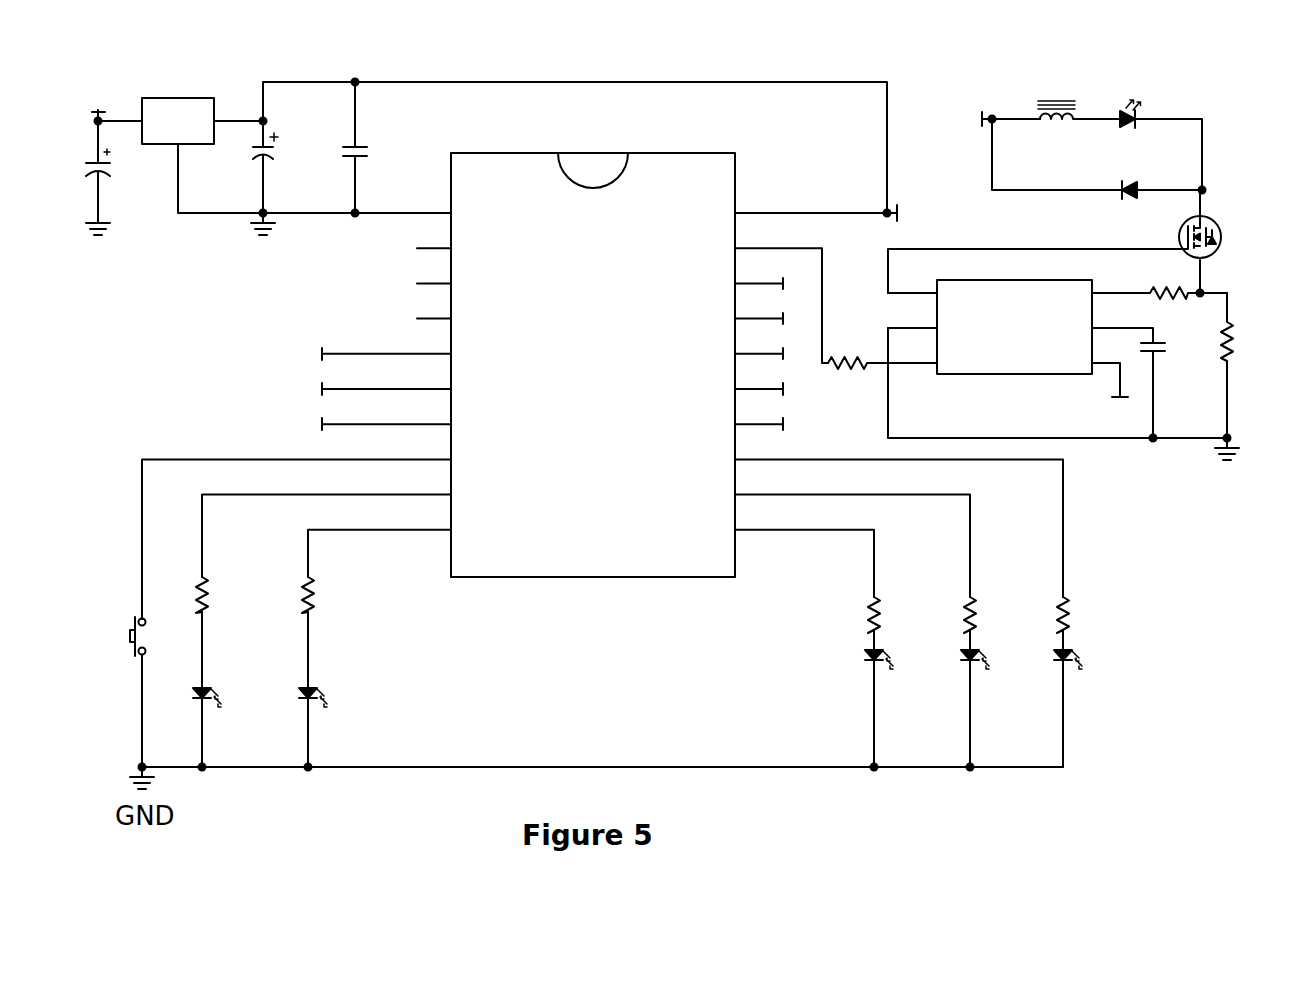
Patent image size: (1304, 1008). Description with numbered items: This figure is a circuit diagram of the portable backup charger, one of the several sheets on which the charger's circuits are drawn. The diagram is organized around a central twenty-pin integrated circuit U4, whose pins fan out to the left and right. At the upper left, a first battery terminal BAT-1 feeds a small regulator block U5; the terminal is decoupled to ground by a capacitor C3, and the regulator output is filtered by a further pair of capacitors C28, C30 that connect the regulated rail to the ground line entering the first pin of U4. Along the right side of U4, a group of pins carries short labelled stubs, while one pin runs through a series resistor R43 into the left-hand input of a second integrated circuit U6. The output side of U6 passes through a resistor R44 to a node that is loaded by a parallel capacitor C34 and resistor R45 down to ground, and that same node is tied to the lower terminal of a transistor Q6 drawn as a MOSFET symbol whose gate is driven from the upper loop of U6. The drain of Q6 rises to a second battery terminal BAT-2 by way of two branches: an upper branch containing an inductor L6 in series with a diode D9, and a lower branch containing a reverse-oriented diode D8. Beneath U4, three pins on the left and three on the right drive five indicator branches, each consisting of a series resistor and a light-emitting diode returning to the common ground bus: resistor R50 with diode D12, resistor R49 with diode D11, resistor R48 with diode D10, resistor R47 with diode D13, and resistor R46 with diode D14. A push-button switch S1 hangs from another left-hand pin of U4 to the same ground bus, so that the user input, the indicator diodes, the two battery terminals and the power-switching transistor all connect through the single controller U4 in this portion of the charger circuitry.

The YB722 main control IC U4 is at (615, 369).
The HT7130 voltage regulator U5 is at (288, 138).
The KP9950 driver IC U6 is at (1057, 343).
The capacitor C3 is at (81, 197).
The capacitor C28 is at (290, 197).
The capacitor C30 is at (384, 147).
The capacitor C34 is at (1155, 383).
The resistor R43 is at (882, 350).
The resistor R44 is at (1159, 280).
The resistor R45 is at (1239, 397).
The resistor R46 is at (1096, 601).
The resistor R47 is at (998, 601).
The resistor R48 is at (901, 601).
The resistor R49 is at (337, 592).
The resistor R50 is at (230, 592).
The diode D8 is at (1156, 175).
The light emitting diode D9 is at (1161, 128).
The light emitting diode D10 is at (910, 659).
The light emitting diode D11 is at (346, 698).
The light emitting diode D12 is at (238, 698).
The light emitting diode D13 is at (1004, 659).
The light emitting diode D14 is at (1101, 659).
The inductor L6 is at (1078, 94).
The MOSFET transistor Q6 is at (1224, 241).
The push button switch S1 is at (156, 636).
The battery 1 terminal BAT-1 is at (75, 120).
The battery 2 terminal BAT-2 is at (1009, 147).